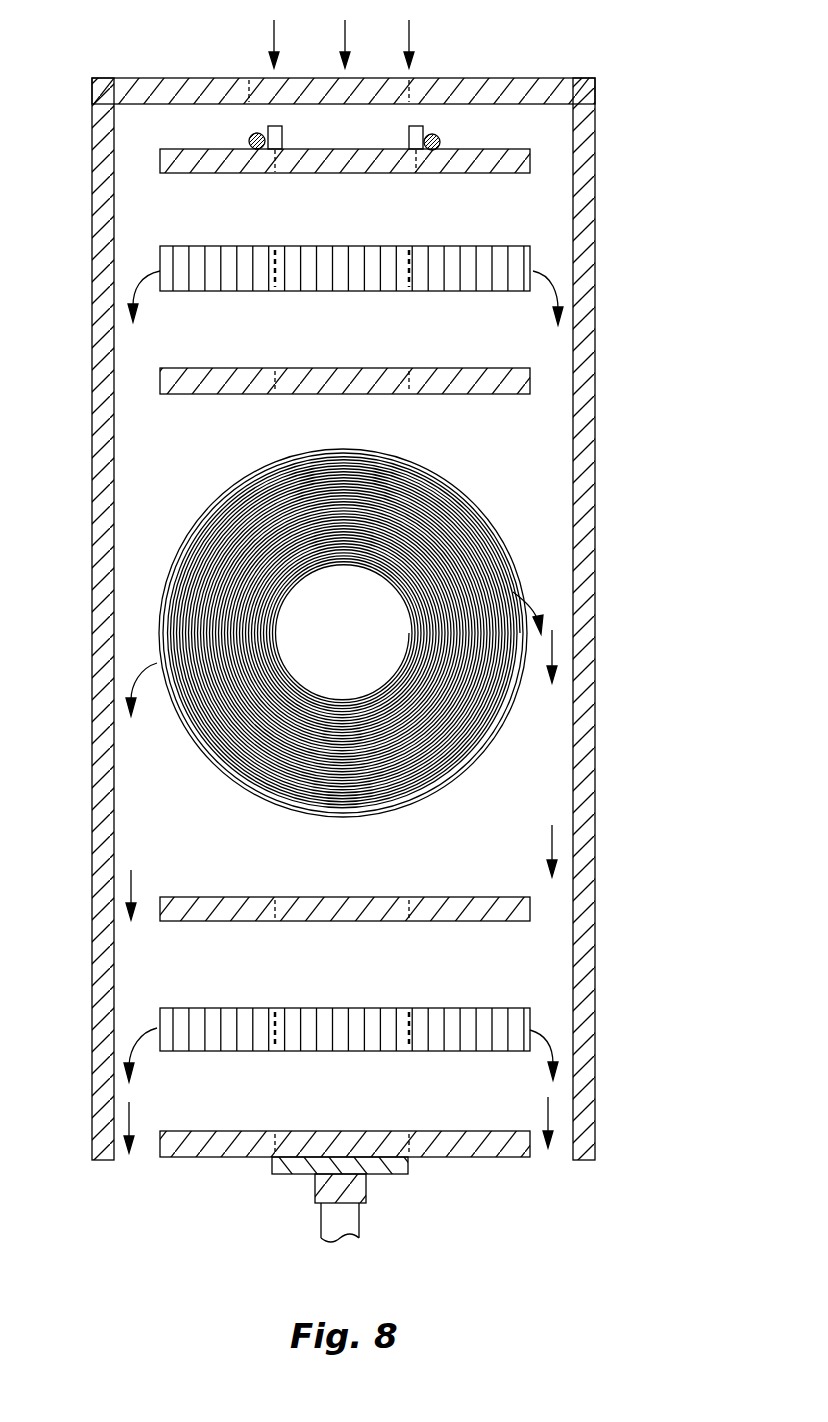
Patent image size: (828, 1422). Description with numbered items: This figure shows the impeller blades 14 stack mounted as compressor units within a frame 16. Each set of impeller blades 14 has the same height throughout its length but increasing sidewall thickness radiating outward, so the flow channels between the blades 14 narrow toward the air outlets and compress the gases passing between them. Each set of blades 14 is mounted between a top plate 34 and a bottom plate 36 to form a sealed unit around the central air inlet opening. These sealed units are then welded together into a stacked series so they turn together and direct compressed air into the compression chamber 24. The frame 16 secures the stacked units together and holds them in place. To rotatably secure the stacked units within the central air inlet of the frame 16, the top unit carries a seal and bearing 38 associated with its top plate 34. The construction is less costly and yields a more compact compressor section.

The impeller blade 14 is at (527, 264).
The frame 16 is at (583, 455).
The compression chamber 24 is at (528, 497).
The top plate 34 is at (518, 163).
The bottom plate 36 is at (523, 384).
The seal and bearing 38 is at (442, 138).